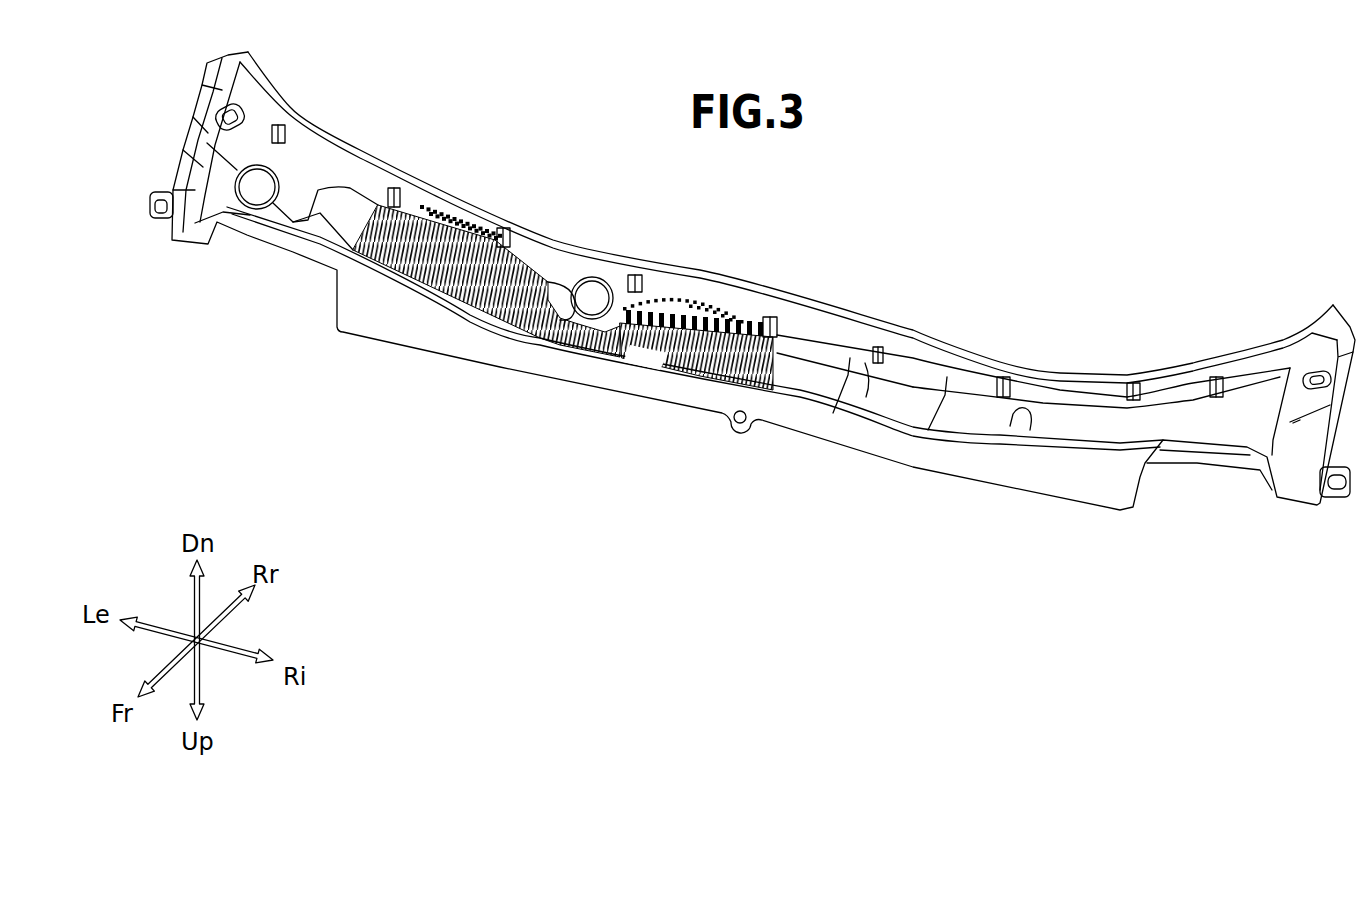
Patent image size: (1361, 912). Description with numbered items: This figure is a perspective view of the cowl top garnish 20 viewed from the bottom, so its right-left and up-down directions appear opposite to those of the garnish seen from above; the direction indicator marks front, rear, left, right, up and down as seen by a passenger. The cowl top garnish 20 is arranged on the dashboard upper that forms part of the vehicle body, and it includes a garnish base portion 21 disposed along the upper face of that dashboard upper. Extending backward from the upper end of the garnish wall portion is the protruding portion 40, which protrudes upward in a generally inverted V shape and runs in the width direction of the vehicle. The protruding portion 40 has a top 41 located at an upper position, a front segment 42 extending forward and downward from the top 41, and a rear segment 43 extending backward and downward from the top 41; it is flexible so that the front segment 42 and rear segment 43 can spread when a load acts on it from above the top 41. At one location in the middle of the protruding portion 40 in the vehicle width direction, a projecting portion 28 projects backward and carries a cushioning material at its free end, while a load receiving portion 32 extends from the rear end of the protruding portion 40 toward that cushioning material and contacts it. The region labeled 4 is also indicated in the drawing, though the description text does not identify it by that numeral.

The cowl top garnish 20 is at (1108, 145).
The garnish base portion 21 is at (583, 373).
The projecting portion 28 is at (767, 378).
The load receiving portion 32 is at (784, 341).
The panel portion 4 is at (801, 395).
The protruding portion 40 is at (983, 413).
The top 41 is at (1085, 408).
The front segment 42 is at (1027, 428).
The rear segment 43 is at (1050, 393).